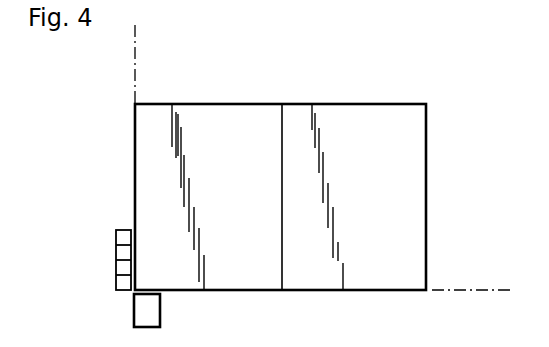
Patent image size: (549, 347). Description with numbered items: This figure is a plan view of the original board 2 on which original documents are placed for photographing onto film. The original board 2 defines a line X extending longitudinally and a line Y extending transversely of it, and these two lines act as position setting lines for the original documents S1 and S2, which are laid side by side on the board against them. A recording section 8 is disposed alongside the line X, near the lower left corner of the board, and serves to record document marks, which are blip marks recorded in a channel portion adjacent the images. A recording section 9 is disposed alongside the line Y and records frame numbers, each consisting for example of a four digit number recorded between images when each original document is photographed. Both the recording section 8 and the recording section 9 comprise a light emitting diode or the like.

The original board 2 is at (417, 95).
The recording section 8 is at (153, 312).
The recording section 9 is at (121, 252).
The original document S1 is at (255, 258).
The original document S2 is at (355, 258).
The line X is at (460, 292).
The line Y is at (136, 64).